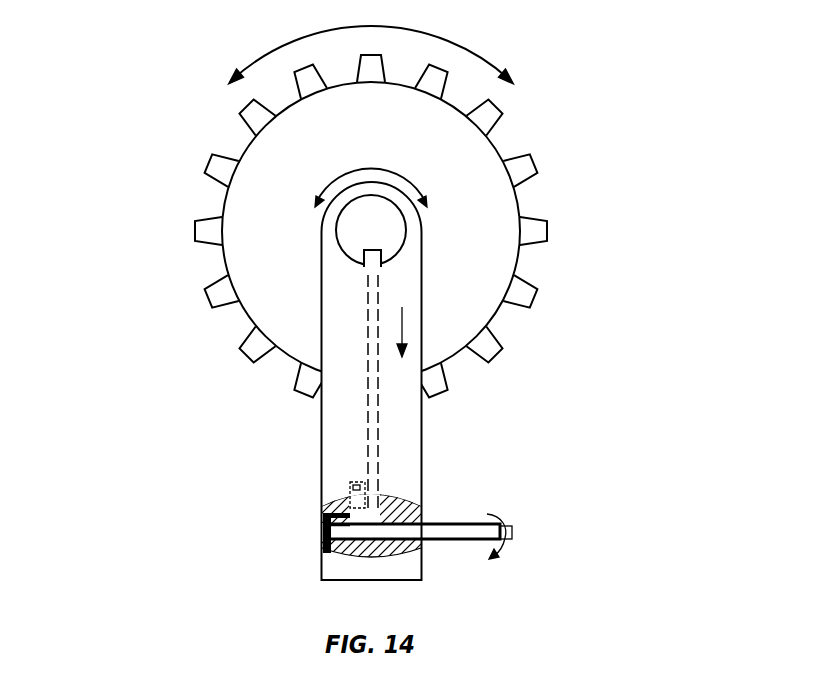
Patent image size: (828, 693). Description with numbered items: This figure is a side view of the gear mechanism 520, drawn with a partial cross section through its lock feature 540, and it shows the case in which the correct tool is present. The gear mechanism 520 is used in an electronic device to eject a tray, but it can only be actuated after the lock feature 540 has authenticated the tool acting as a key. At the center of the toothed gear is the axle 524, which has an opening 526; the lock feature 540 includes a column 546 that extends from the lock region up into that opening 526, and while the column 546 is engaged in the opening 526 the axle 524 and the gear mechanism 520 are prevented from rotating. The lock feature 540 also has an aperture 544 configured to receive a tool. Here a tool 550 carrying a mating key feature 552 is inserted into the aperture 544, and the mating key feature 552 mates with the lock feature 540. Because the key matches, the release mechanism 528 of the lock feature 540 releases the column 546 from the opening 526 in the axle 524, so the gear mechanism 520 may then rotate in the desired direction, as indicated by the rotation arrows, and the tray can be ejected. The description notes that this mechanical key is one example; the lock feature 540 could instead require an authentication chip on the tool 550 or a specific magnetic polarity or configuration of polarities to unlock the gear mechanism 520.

The gear mechanism 520 is at (143, 187).
The axle 524 is at (407, 233).
The opening 526 is at (360, 271).
The release mechanism 528 is at (348, 505).
The lock feature 540 is at (489, 469).
The aperture 544 is at (432, 514).
The column 546 is at (367, 415).
The tool 550 is at (513, 533).
The mating key feature 552 is at (323, 551).